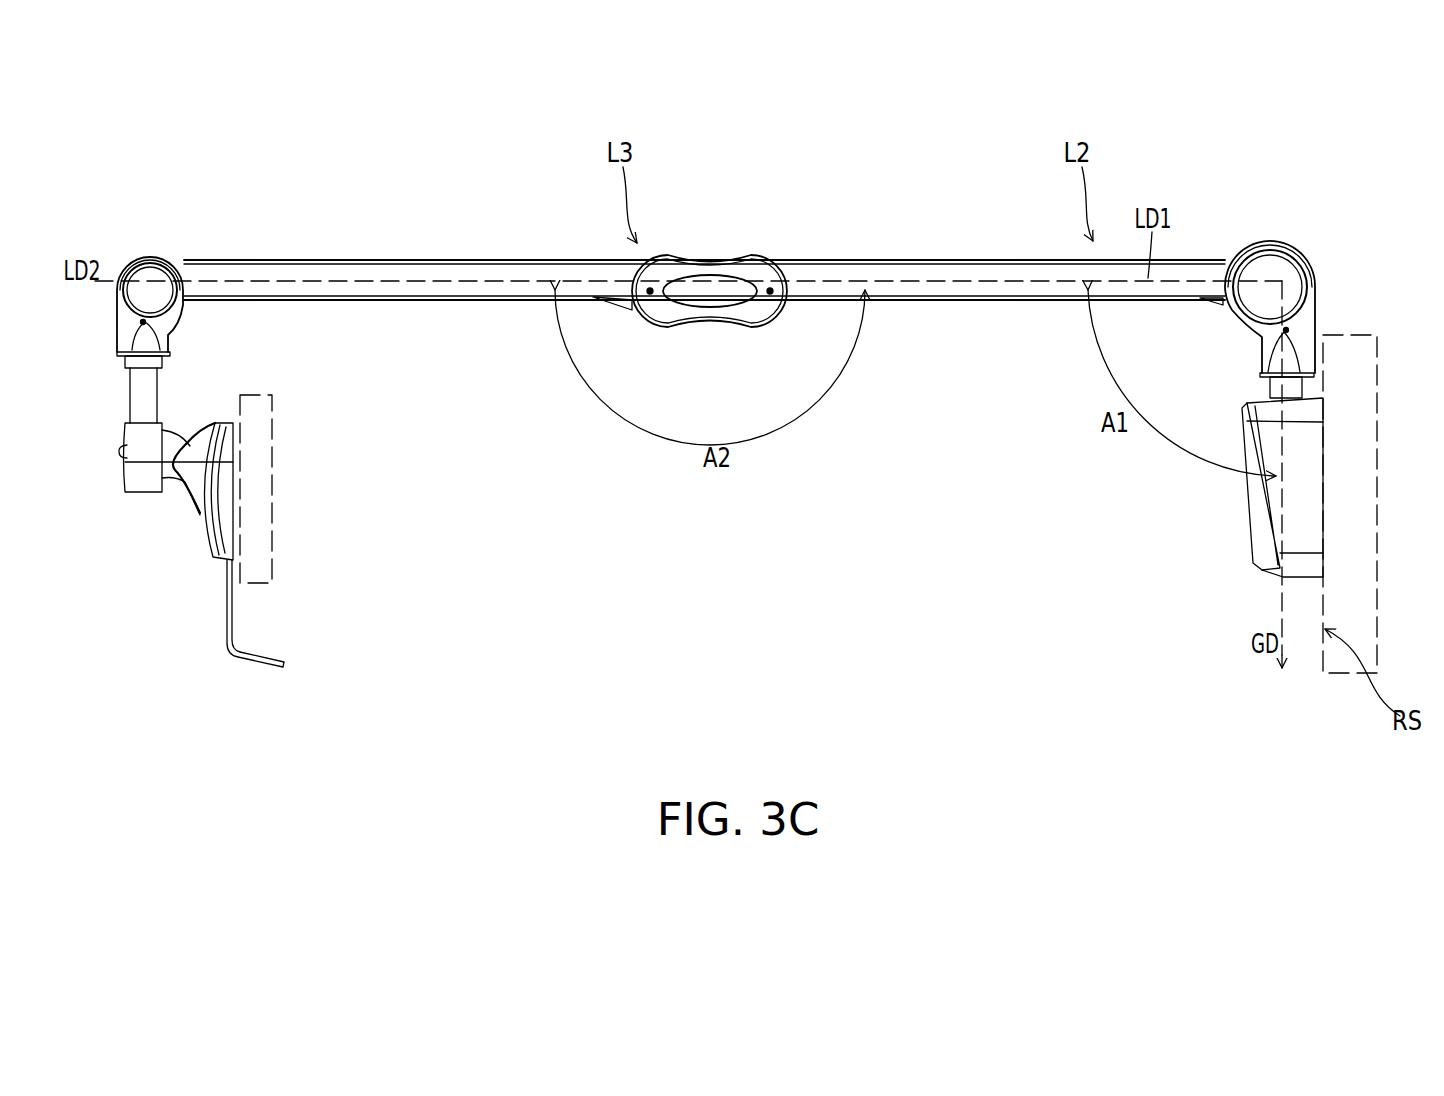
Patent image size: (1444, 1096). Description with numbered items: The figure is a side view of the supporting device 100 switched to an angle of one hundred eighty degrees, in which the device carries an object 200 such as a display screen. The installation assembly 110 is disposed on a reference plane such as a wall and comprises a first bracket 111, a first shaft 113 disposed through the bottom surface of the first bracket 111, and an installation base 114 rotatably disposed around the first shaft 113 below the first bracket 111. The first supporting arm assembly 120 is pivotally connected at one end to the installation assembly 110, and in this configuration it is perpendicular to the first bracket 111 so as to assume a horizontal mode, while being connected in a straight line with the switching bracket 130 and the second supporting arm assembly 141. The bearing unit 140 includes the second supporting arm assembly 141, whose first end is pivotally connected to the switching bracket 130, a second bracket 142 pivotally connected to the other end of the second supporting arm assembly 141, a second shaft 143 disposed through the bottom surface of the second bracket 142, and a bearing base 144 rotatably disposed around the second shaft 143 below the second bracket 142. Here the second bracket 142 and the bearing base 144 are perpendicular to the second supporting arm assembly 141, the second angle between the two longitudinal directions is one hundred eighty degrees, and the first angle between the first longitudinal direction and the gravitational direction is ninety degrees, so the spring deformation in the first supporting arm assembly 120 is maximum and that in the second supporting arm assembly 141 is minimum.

The supporting device 100 is at (1146, 745).
The installation assembly 110 is at (1382, 212).
The first bracket 111 is at (1264, 276).
The first shaft 113 is at (1280, 343).
The installation base 114 is at (1296, 438).
The first supporting arm assembly 120 is at (987, 273).
The switching bracket 130 is at (710, 291).
The bearing unit 140 is at (308, 155).
The second supporting arm assembly 141 is at (287, 277).
The second bracket 142 is at (152, 292).
The second shaft 143 is at (147, 395).
The bearing base 144 is at (193, 453).
The object 200 is at (272, 468).